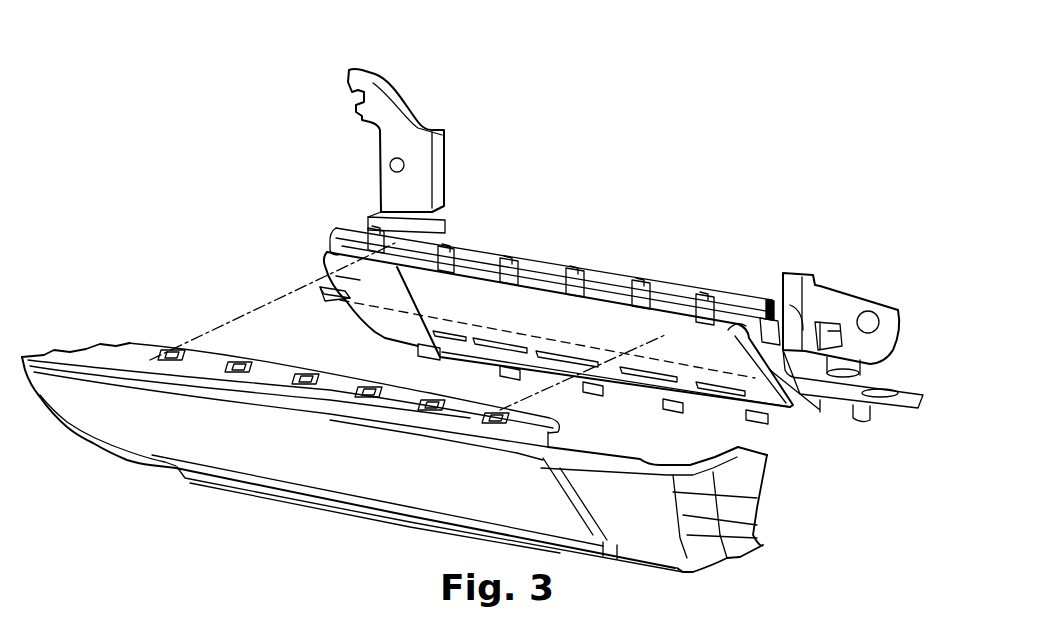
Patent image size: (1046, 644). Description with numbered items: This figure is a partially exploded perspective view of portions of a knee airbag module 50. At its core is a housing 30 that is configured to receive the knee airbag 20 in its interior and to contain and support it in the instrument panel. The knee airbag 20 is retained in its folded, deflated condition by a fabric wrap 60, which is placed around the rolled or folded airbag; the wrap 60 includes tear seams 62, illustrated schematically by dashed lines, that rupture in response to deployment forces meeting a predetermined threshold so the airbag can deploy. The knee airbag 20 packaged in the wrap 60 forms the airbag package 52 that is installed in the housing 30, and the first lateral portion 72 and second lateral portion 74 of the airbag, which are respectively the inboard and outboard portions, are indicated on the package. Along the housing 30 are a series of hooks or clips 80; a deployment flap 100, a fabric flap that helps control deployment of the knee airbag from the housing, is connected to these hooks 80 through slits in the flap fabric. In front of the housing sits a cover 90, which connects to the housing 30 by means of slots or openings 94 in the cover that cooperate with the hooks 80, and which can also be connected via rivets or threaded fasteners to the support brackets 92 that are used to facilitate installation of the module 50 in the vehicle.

The knee airbag module 50 is at (194, 141).
The knee airbag 20 is at (690, 350).
The housing 30 is at (733, 330).
The airbag package 52 is at (727, 390).
The fabric wrap 60 is at (387, 317).
The tear seams 62 is at (347, 318).
The first lateral portion 72 is at (347, 285).
The second lateral portion 74 is at (747, 333).
The hooks or clips 80 is at (376, 232).
The cover 90 is at (258, 450).
The support brackets 92 is at (397, 130).
The slots or openings 94 is at (233, 364).
The deployment flap 100 is at (537, 250).